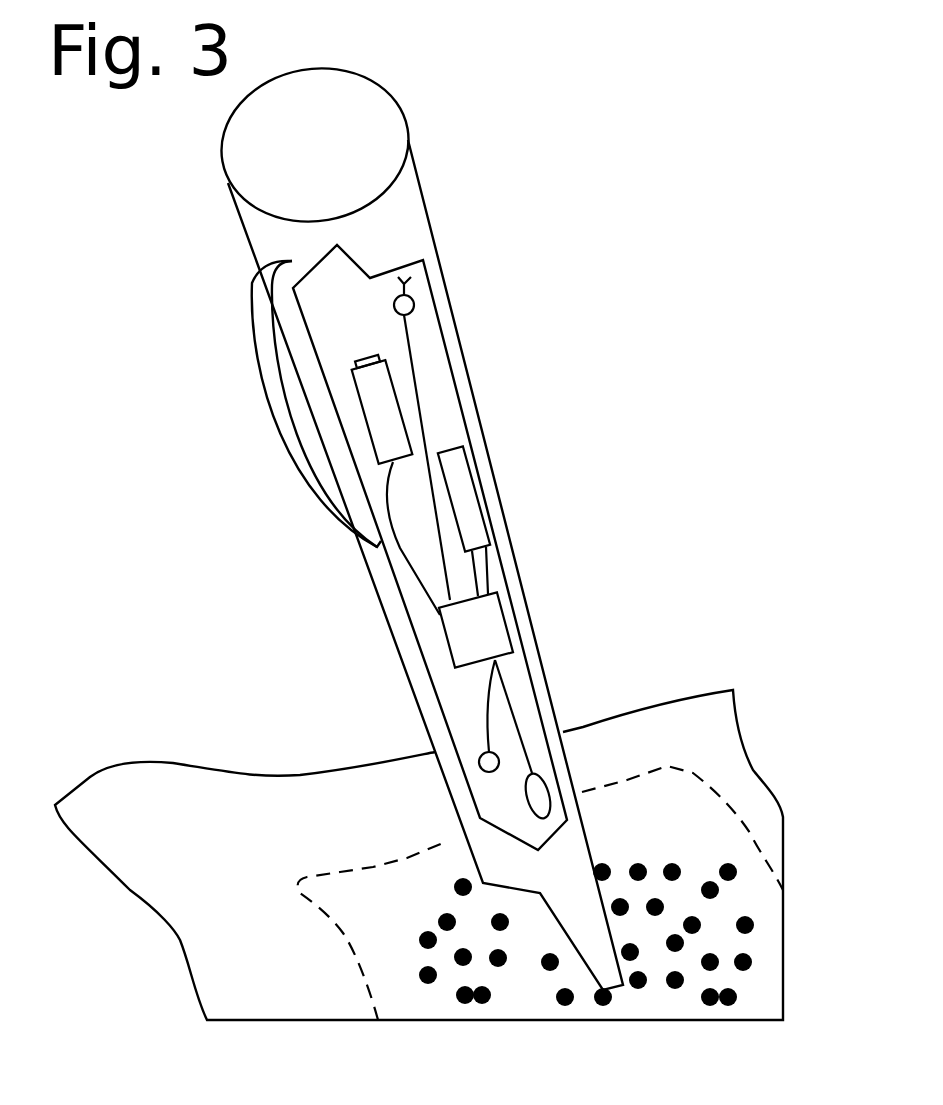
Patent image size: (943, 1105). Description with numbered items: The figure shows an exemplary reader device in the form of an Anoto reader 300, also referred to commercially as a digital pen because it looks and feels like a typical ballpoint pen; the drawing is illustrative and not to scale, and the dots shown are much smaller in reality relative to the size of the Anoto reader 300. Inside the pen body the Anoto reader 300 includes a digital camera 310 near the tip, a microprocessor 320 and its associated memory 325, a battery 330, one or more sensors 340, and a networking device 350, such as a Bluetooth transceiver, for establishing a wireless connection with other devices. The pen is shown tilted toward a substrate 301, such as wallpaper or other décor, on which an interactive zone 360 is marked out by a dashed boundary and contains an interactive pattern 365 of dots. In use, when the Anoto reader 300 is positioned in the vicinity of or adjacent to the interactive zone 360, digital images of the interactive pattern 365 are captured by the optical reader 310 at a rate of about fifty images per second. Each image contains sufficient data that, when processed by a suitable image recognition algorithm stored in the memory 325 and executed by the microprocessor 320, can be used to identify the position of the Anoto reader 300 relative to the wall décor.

The Anoto reader 300 is at (469, 201).
The substrate 301 is at (183, 818).
The digital camera 310 is at (549, 789).
The microprocessor 320 is at (508, 618).
The memory 325 is at (470, 470).
The battery 330 is at (356, 366).
The sensors 340 is at (481, 770).
The networking device 350 is at (394, 302).
The interactive zone 360 is at (667, 766).
The interactive pattern 365 is at (678, 829).